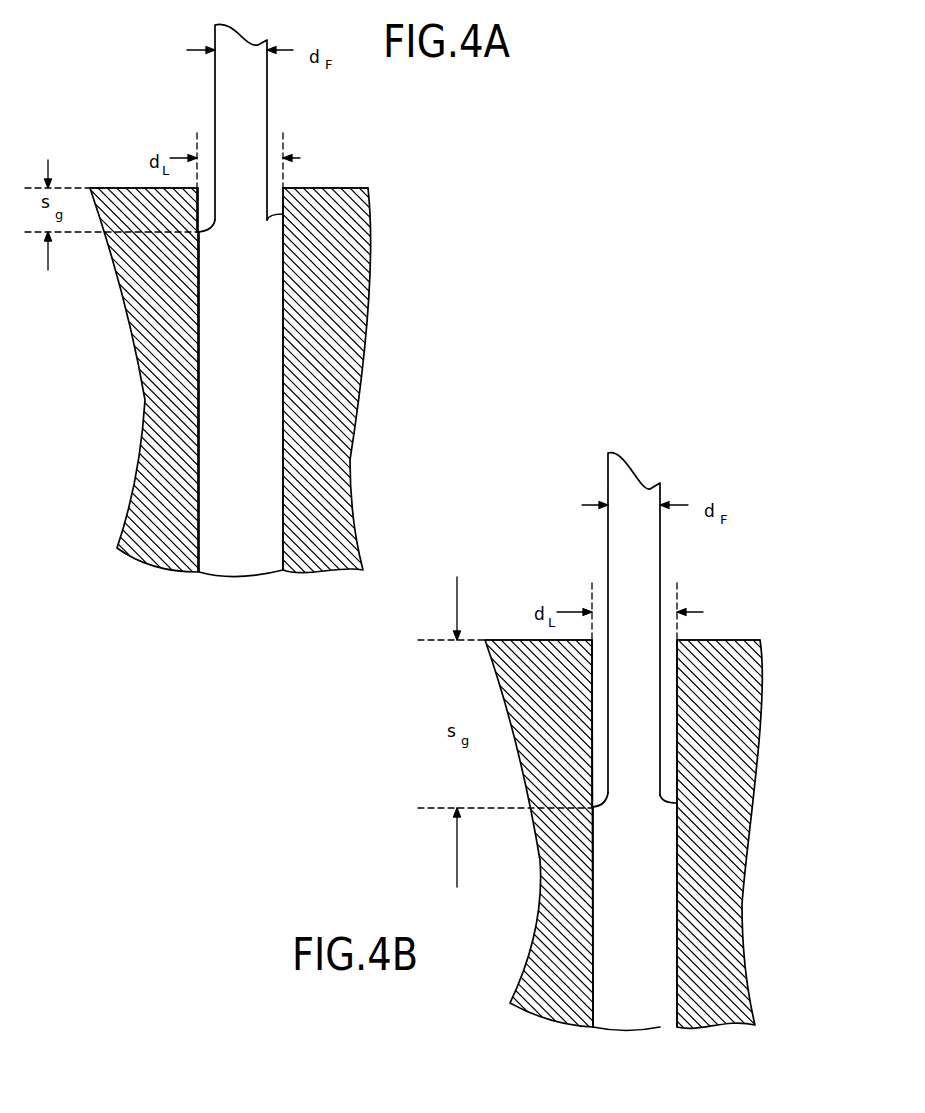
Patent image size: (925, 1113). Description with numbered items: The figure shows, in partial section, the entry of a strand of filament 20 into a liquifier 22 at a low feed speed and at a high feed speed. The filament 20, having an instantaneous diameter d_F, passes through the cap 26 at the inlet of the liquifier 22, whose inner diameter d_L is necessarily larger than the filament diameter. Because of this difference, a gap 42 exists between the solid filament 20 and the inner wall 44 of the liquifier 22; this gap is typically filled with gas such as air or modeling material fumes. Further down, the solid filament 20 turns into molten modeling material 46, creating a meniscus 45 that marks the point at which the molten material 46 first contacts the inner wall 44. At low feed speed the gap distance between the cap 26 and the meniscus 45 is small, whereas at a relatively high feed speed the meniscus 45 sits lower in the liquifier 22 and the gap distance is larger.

In FIG. 4A, the filament 20 is at (247, 125).
In FIG. 4B, the filament 20 is at (640, 578).
In FIG. 4A, the liquifier 22 is at (360, 408).
In FIG. 4B, the liquifier 22 is at (755, 858).
In FIG. 4A, the cap 26 is at (125, 188).
In FIG. 4B, the cap 26 is at (522, 640).
In FIG. 4A, the gap 42 is at (279, 203).
In FIG. 4B, the gap 42 is at (664, 665).
In FIG. 4A, the inner wall 44 is at (197, 267).
In FIG. 4B, the inner wall 44 is at (676, 729).
In FIG. 4A, the meniscus 45 is at (272, 222).
In FIG. 4B, the meniscus 45 is at (667, 789).
In FIG. 4A, the molten modeling material 46 is at (235, 465).
In FIG. 4B, the molten modeling material 46 is at (647, 937).